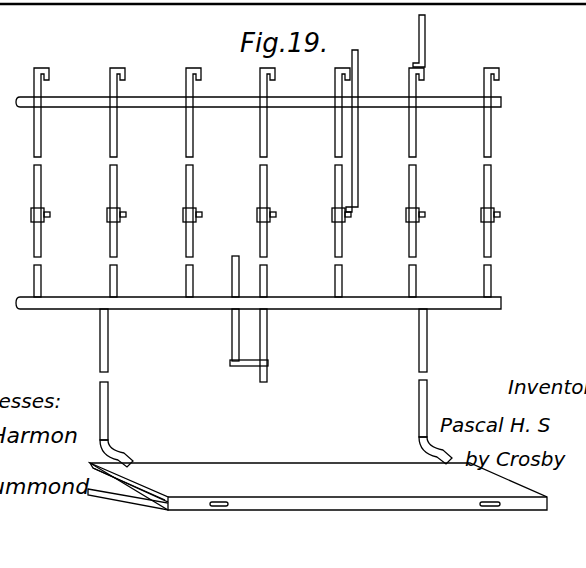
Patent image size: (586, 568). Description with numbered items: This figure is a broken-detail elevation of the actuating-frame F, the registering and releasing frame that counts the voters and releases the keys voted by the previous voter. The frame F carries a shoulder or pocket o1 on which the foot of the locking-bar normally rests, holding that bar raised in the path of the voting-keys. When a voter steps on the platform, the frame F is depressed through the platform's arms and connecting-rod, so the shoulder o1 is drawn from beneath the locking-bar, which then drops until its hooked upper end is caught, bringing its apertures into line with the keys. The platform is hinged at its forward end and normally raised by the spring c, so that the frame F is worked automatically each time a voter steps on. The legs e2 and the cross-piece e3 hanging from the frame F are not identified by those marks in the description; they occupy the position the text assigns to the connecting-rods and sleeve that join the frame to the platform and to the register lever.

The shoulder or pocket o1 is at (200, 72).
The actuating-frame F is at (322, 309).
The supporting arm e2 is at (108, 352).
The cross piece e3 is at (238, 366).
The spring c is at (317, 486).